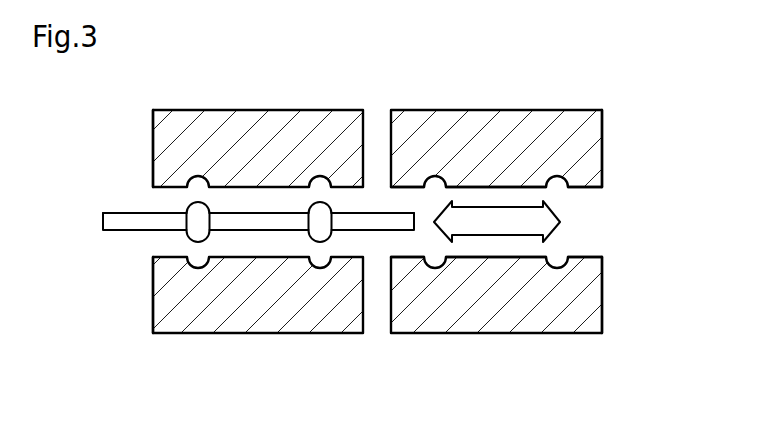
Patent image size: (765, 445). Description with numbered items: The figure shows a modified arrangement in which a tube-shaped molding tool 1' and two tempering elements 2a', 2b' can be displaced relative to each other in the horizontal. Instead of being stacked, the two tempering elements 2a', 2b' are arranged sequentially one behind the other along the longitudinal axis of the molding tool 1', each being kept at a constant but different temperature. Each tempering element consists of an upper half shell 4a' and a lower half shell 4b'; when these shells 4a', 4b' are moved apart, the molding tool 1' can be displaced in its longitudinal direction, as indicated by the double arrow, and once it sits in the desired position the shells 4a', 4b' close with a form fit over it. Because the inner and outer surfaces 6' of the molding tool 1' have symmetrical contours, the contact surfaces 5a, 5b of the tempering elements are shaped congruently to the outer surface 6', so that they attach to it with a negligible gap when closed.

The molding tool 1' is at (258, 250).
The outer surface of the molding tool 6' is at (258, 180).
The tempering element 2a' is at (261, 176).
The tempering element 2b' is at (582, 177).
The half shell 4a' is at (377, 113).
The half shell 4b' is at (377, 333).
The contact surface 5a is at (583, 187).
The contact surface 5b is at (583, 257).